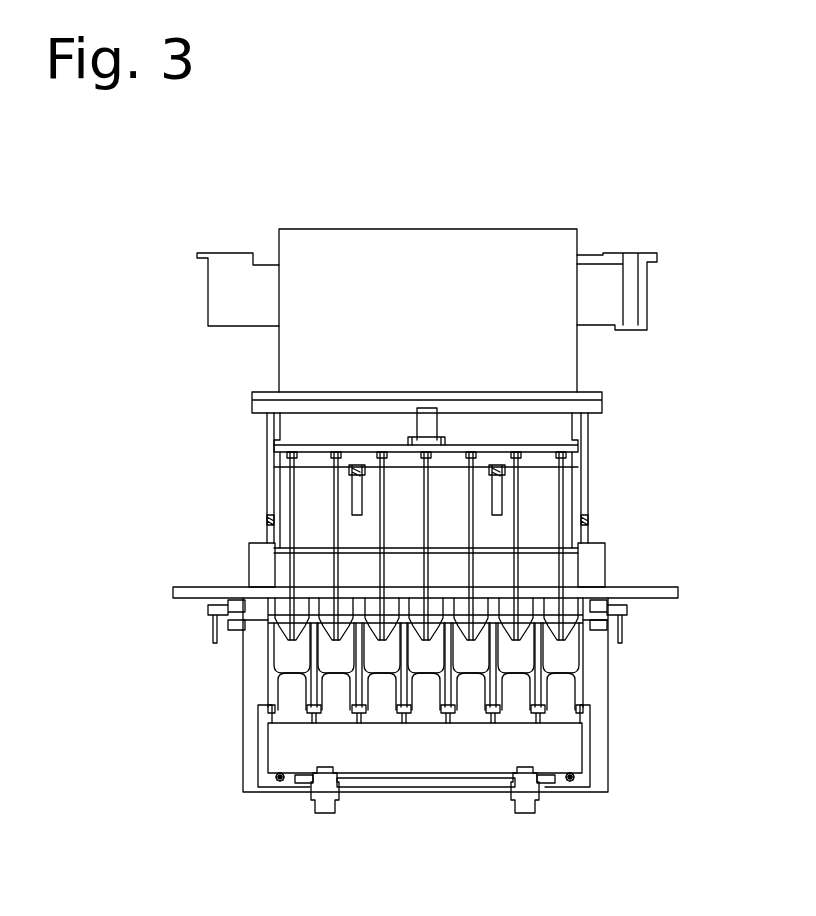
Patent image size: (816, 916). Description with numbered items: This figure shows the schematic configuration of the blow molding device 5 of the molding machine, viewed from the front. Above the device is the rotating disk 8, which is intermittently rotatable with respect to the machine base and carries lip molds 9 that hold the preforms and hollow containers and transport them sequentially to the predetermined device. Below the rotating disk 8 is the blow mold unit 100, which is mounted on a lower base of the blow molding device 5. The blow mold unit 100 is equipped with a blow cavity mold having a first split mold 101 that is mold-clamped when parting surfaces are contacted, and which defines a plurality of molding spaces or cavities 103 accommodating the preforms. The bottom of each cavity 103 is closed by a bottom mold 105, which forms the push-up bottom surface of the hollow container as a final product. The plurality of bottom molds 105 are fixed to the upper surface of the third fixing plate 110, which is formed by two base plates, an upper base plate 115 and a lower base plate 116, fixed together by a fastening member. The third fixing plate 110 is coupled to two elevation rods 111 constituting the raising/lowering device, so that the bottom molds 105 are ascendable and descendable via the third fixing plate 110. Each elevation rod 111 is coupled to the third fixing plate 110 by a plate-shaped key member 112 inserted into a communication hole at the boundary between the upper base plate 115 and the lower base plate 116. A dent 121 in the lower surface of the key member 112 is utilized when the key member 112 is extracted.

The blow molding device 5 is at (701, 453).
The rotating disk 8 is at (665, 587).
The lip mold 9 is at (622, 618).
The blow mold unit 100 is at (387, 754).
The first split mold 101 is at (556, 682).
The molding space (cavity) 103 is at (282, 656).
The bottom mold 105 is at (380, 712).
The third fixing plate 110 is at (425, 816).
The elevation rod 111 is at (322, 814).
The key member 112 is at (310, 782).
The upper base plate 115 is at (437, 745).
The lower base plate 116 is at (398, 775).
The dent 121 is at (273, 799).